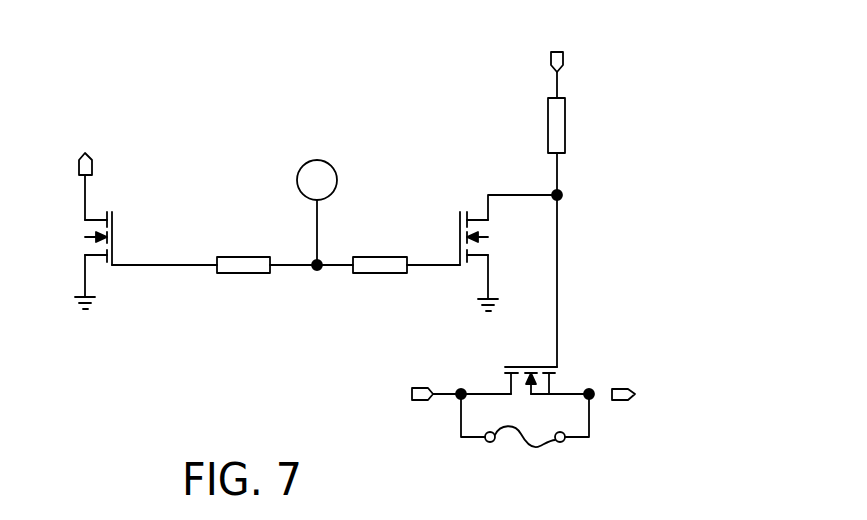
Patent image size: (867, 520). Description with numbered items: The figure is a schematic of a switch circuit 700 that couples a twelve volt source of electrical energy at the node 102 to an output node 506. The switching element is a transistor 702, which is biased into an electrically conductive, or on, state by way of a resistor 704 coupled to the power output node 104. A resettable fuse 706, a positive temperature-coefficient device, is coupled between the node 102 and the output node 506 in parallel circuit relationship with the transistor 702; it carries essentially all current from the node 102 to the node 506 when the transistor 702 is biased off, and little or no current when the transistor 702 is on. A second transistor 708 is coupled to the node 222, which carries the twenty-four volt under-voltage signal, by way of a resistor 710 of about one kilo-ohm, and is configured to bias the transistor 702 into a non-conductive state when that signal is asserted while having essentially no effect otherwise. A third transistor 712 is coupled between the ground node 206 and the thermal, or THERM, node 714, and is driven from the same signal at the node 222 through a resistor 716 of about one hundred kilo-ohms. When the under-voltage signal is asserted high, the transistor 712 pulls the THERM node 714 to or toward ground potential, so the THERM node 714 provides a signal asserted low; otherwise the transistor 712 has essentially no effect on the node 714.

The switch circuit 700 is at (259, 26).
The thermal (THERM) node 714 is at (92, 166).
The transistor 712 is at (113, 233).
The ground node 206 is at (84, 311).
The node 222 is at (298, 172).
The resistor 716 is at (227, 273).
The resistor 710 is at (363, 273).
The transistor 708 is at (460, 220).
The power output node 104 is at (563, 60).
The resistor 704 is at (565, 123).
The transistor 702 is at (517, 367).
The node 102 is at (422, 388).
The output node 506 is at (623, 388).
The resettable fuse 706 is at (538, 448).